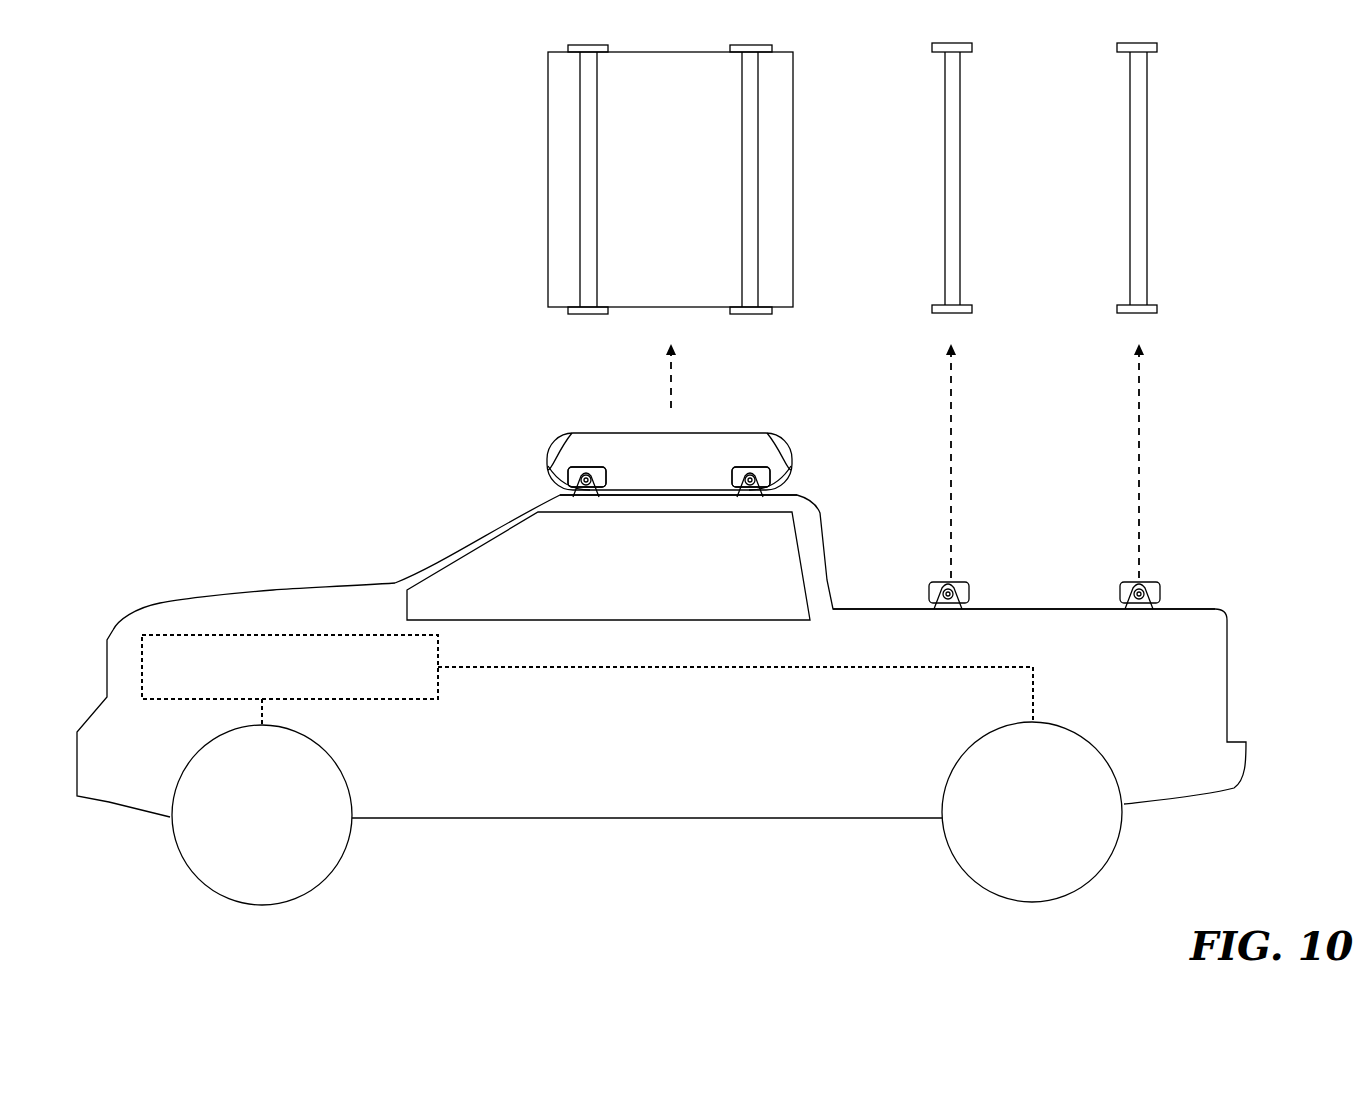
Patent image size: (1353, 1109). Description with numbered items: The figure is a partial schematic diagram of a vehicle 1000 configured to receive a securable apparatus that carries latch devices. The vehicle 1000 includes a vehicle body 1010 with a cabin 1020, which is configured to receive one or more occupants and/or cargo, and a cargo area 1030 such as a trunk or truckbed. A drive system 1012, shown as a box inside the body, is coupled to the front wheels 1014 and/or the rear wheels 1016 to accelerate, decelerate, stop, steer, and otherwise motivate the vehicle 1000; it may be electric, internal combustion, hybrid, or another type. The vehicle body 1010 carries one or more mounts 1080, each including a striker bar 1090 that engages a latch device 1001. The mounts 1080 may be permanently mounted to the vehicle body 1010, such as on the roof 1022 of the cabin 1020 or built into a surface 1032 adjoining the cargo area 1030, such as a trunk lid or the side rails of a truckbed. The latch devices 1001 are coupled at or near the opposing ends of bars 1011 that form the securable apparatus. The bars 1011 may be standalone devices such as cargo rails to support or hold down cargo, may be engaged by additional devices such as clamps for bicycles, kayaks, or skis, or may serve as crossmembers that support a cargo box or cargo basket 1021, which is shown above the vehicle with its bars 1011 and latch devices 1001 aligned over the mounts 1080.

The vehicle 1000 is at (160, 433).
The vehicle body 1010 is at (270, 590).
The drive system 1012 is at (587, 680).
The front wheels 1014 is at (348, 840).
The rear wheels 1016 is at (945, 840).
The cabin 1020 is at (513, 580).
The cargo box or cargo basket 1021 is at (547, 162).
The roof 1022 is at (757, 503).
The cargo area 1030 is at (1010, 637).
The surface adjoining the cargo area 1032 is at (1183, 599).
The latch device 1001 is at (568, 48).
The bars 1011 is at (587, 213).
The mounts 1080 is at (548, 462).
The striker bar 1090 is at (550, 482).